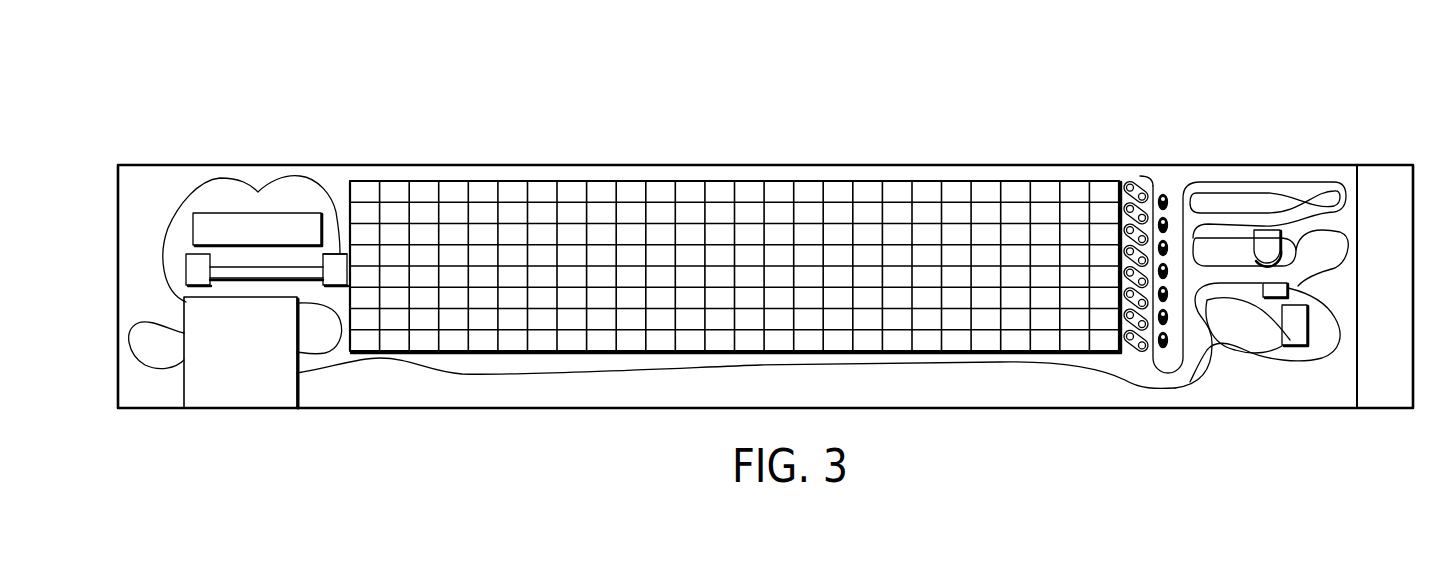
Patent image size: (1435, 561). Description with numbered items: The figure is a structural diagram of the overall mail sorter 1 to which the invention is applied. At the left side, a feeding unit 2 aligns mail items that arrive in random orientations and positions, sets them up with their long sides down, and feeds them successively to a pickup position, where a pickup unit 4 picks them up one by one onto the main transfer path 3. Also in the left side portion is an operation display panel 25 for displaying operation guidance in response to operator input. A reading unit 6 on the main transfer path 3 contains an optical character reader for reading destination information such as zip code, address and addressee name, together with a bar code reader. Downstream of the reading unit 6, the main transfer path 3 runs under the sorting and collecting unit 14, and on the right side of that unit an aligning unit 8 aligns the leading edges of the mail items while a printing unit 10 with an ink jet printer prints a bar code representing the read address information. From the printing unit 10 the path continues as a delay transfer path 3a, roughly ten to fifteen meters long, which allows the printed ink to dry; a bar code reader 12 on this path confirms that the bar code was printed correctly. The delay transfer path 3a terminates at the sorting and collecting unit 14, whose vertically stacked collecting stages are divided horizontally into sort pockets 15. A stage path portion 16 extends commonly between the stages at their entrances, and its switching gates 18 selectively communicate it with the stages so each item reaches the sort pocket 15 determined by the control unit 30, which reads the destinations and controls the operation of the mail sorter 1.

The mail sorter 1 is at (796, 122).
The feeding unit 2 is at (225, 255).
The main transfer path 3 is at (213, 182).
The delay transfer path 3a is at (1270, 180).
The pickup unit 4 is at (348, 254).
The reading unit 6 is at (203, 391).
The aligning unit 8 is at (1289, 289).
The printing unit 10 is at (1296, 345).
The bar code reader 12 is at (1256, 246).
The sorting and collecting unit 14 is at (900, 180).
The sort pockets 15 is at (695, 192).
The stage path portion 16 is at (1161, 168).
The switching gates 18 is at (1166, 198).
The operation display panel 25 is at (283, 220).
The control unit 30 is at (1383, 165).